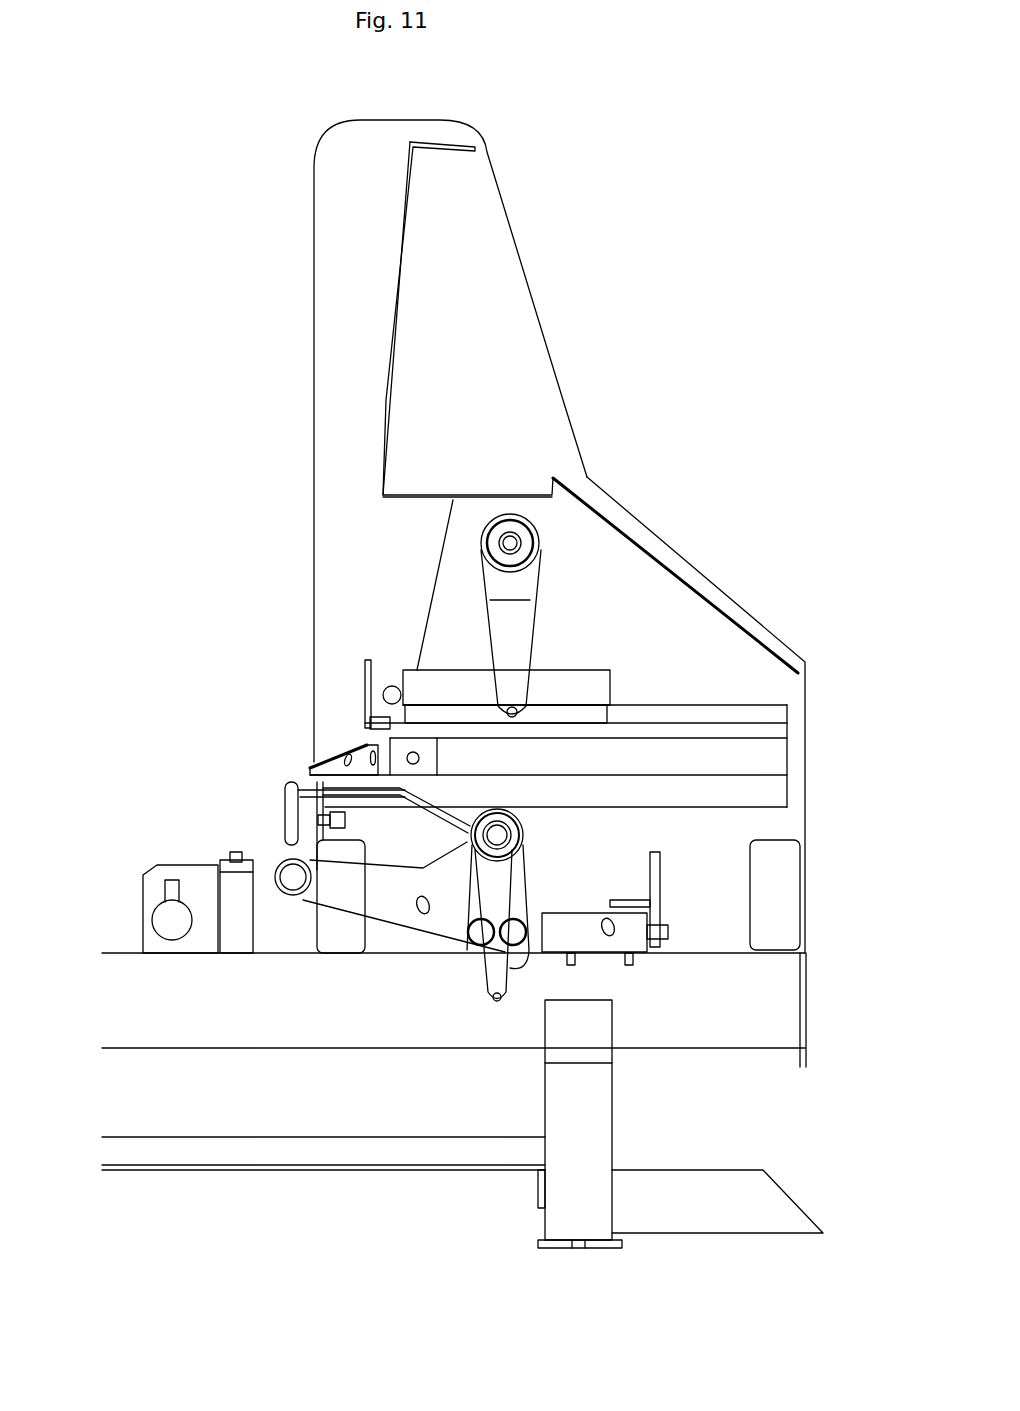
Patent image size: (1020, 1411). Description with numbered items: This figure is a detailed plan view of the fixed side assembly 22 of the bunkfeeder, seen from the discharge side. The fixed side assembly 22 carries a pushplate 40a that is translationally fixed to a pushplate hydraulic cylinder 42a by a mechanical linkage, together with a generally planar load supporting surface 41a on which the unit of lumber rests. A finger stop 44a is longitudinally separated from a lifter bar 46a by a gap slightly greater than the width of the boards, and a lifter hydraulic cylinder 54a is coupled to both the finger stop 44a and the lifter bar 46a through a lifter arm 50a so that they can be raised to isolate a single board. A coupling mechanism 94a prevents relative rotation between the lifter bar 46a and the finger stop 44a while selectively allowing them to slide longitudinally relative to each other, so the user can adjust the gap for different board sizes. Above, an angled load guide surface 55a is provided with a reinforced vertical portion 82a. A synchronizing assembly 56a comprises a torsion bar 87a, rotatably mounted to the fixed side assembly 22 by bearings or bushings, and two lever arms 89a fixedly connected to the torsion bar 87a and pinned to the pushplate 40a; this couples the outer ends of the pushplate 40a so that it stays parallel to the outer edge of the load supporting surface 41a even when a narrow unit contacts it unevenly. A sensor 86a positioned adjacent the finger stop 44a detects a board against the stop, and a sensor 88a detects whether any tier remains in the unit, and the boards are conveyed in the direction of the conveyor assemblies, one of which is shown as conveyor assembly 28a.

The fixed side assembly 22 is at (213, 68).
The angled load guide surface 55a is at (398, 195).
The pushplate hydraulic cylinder 42a is at (452, 688).
The torsion bar 87a is at (584, 402).
The synchronizing assembly 56a is at (553, 598).
The lever arm 89a is at (513, 637).
The sensor 88a is at (358, 720).
The reinforced vertical portion 82a is at (345, 716).
The pushplate 40a is at (342, 710).
The lifter hydraulic cylinder 54a is at (307, 784).
The load supporting surface 41a is at (313, 763).
The finger stop 44a is at (285, 803).
The sensor housing 28a is at (233, 850).
The sensor 86a is at (283, 823).
The lifter bar 46a is at (283, 893).
The lifter arm 50a is at (428, 912).
The coupling mechanism 94a is at (497, 835).